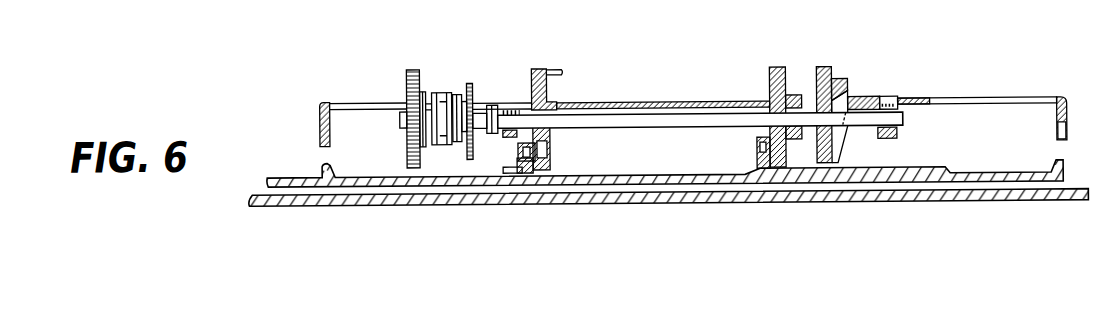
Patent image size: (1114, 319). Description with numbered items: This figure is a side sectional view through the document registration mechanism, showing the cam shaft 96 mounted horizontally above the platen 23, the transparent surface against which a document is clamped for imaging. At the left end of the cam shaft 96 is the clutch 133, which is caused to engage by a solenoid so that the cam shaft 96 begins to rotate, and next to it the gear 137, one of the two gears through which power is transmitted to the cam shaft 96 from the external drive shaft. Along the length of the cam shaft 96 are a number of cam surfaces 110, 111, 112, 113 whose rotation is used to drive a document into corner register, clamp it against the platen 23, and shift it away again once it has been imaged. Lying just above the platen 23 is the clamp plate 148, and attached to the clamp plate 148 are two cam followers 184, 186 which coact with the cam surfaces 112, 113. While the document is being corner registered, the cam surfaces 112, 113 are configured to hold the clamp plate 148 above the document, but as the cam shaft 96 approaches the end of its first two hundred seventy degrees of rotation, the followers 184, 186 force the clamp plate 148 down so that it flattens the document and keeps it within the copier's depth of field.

The platen 23 is at (633, 205).
The cam shaft 96 is at (615, 120).
The cam surface 110 is at (832, 86).
The cam surface 111 is at (850, 98).
The cam surface 112 is at (533, 84).
The cam surface 113 is at (769, 84).
The clutch 133 is at (443, 96).
The gear 137 is at (408, 82).
The clamp plate 148 is at (941, 168).
The cam follower 184 is at (518, 147).
The cam follower 186 is at (758, 144).